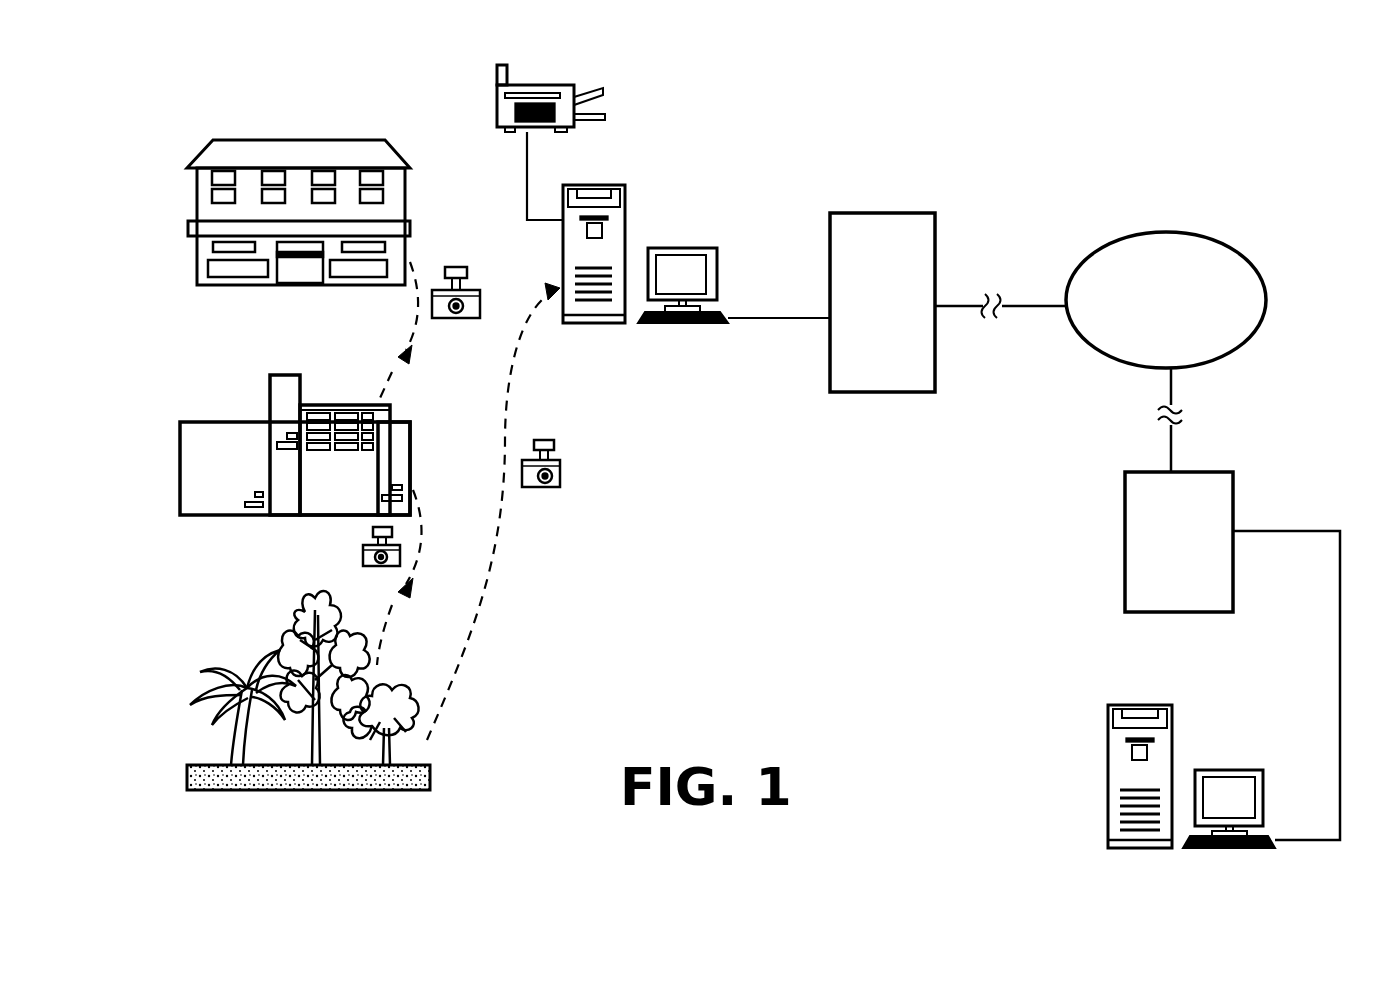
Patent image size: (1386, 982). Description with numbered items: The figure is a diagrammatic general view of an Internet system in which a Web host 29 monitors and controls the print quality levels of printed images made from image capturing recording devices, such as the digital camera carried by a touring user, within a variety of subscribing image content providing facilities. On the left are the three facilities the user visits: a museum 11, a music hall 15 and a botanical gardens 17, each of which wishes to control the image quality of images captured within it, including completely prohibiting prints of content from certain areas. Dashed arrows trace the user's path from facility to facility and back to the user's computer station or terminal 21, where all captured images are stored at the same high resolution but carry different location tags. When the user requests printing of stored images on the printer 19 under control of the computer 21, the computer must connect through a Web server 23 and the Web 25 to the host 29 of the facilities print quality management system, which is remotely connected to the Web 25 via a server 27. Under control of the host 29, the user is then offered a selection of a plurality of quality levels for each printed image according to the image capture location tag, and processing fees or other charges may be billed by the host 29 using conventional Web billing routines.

The museum 11 is at (197, 191).
The music hall 15 is at (180, 461).
The botanical gardens 17 is at (187, 782).
The printer 19 is at (558, 85).
The computer 21 is at (567, 330).
The Web server 23 is at (915, 213).
The Web 25 is at (1172, 296).
The server 27 is at (1170, 563).
The Web host 29 is at (1108, 786).